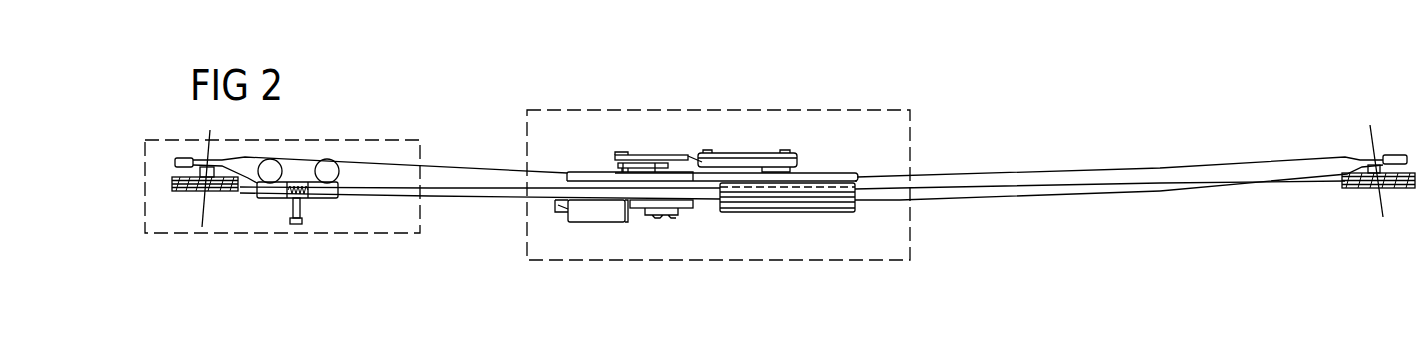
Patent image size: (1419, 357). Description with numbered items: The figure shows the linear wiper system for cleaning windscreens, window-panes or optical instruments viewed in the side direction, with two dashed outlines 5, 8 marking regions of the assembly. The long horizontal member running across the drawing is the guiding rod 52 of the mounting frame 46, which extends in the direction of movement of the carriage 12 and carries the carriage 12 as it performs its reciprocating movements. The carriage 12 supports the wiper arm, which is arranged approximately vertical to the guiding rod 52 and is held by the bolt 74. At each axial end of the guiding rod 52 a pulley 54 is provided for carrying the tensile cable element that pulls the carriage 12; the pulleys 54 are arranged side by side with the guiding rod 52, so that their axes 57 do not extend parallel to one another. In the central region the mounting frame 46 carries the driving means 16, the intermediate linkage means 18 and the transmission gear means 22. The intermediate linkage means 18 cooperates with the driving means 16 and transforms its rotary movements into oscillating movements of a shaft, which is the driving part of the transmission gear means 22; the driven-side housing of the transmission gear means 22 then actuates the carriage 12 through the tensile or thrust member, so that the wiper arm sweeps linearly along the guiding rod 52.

The drive assembly 5 is at (380, 130).
The motor assembly 8 is at (932, 125).
The carriage 12 is at (340, 215).
The driving means 16 is at (573, 213).
The intermediate linkage means 18 is at (818, 135).
The transmission gear means 22 is at (792, 223).
The mounting frame 46 is at (927, 220).
The guiding rod 52 is at (1282, 168).
The pulley 54 is at (180, 189).
The axes of the pulleys 57 is at (207, 213).
The bolt 74 is at (303, 209).